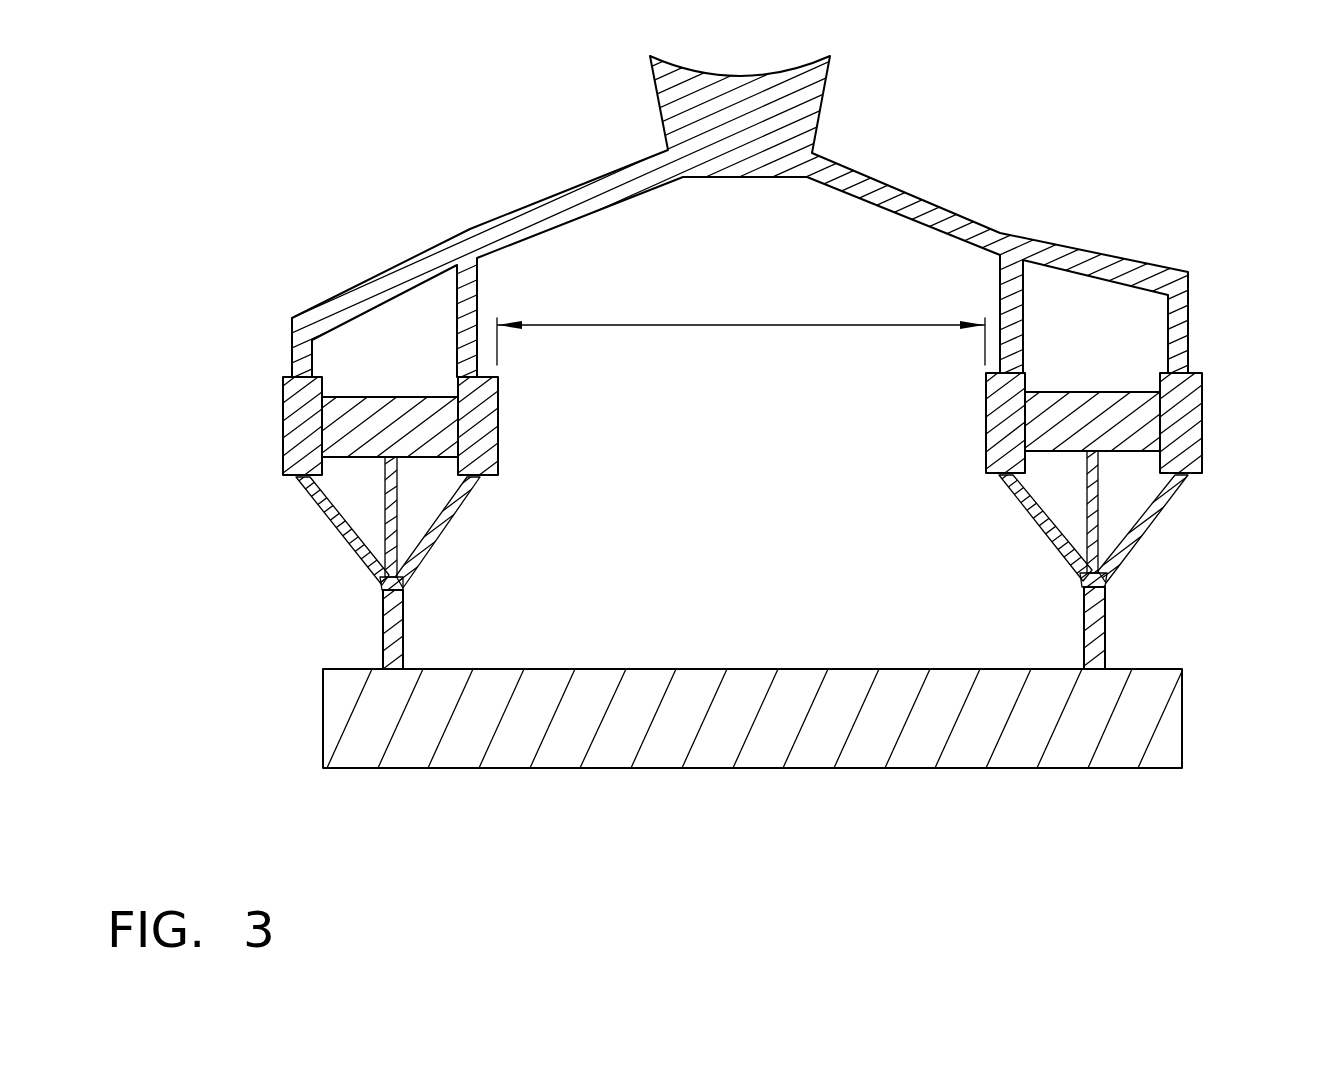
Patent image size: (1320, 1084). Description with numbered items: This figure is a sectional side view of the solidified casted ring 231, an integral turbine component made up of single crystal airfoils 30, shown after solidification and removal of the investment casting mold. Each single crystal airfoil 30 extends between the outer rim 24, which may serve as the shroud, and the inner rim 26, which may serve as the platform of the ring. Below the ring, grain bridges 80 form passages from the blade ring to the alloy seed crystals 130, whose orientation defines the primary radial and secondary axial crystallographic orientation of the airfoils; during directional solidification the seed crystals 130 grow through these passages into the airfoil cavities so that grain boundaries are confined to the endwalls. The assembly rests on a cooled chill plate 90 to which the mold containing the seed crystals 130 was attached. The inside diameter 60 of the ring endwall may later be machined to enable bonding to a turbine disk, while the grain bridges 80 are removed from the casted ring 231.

The solidified casted ring 231 is at (972, 138).
The inside diameter 60 is at (712, 323).
The single crystal airfoil 30 is at (1068, 408).
The inner rim 26 is at (1000, 426).
The outer rim 24 is at (1190, 410).
The grain bridge 80 is at (386, 515).
The alloy seed crystal 130 is at (388, 630).
The chill plate 90 is at (1165, 713).